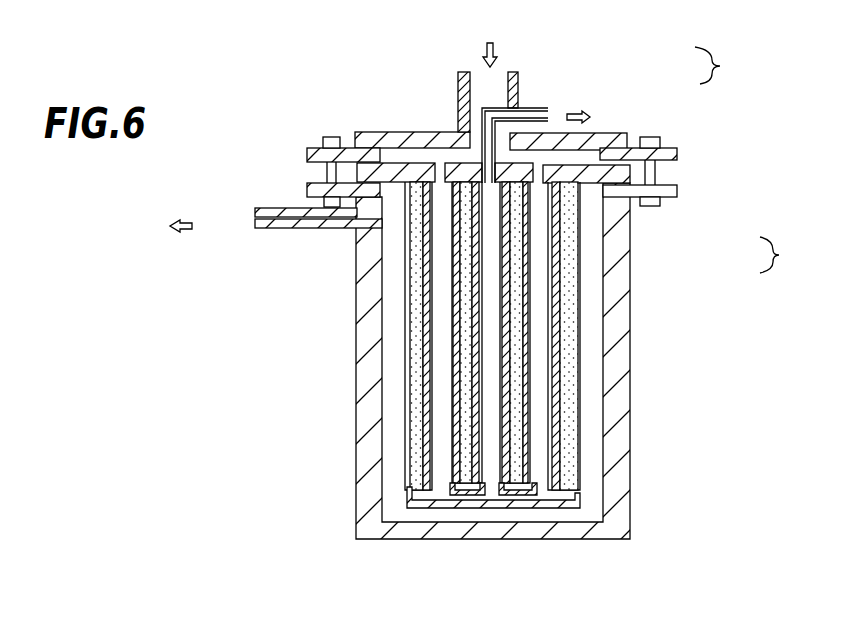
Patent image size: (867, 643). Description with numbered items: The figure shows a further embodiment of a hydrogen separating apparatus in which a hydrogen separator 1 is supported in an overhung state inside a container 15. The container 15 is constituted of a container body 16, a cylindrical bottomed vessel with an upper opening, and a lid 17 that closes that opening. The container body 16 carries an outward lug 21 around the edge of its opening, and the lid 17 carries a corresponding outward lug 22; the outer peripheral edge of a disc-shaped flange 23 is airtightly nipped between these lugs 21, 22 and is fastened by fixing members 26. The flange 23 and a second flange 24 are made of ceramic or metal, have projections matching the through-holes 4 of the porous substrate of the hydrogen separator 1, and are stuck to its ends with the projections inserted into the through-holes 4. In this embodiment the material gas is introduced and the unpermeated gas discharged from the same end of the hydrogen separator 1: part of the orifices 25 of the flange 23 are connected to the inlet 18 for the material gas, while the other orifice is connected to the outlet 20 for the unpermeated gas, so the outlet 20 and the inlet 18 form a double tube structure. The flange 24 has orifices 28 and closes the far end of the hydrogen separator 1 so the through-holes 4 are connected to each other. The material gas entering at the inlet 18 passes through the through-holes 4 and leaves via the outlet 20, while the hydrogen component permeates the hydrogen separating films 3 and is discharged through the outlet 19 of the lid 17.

The hydrogen separator 1 is at (576, 306).
The hydrogen separating film 3 is at (565, 396).
The through-hole 4 is at (540, 348).
The container 15 is at (747, 155).
The container body 16 is at (630, 257).
The lid 17 is at (615, 132).
The inlet 18 is at (518, 73).
The outlet 19 is at (287, 229).
The outlet 20 is at (542, 108).
The outward lug 21 is at (677, 191).
The outward lug 22 is at (676, 148).
The flange 23 is at (658, 166).
The flange 24 is at (578, 494).
The orifice 25 is at (442, 167).
The fixing member 26 is at (322, 137).
The orifice 28 is at (443, 487).